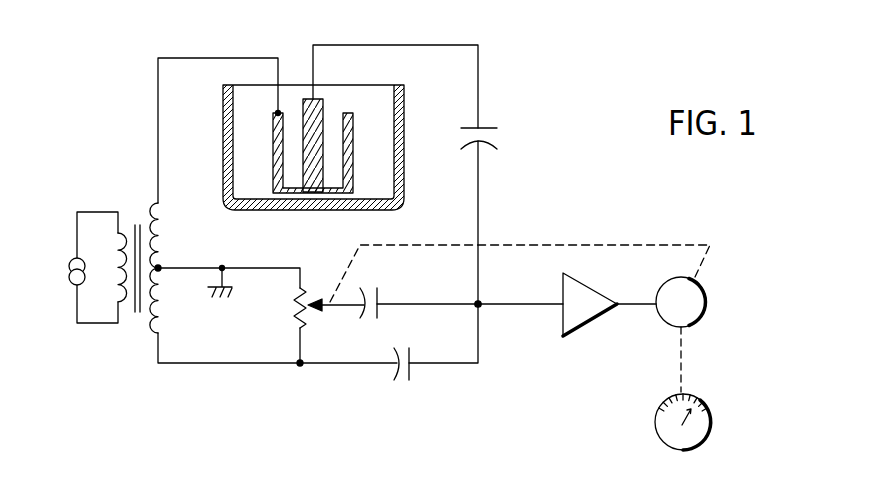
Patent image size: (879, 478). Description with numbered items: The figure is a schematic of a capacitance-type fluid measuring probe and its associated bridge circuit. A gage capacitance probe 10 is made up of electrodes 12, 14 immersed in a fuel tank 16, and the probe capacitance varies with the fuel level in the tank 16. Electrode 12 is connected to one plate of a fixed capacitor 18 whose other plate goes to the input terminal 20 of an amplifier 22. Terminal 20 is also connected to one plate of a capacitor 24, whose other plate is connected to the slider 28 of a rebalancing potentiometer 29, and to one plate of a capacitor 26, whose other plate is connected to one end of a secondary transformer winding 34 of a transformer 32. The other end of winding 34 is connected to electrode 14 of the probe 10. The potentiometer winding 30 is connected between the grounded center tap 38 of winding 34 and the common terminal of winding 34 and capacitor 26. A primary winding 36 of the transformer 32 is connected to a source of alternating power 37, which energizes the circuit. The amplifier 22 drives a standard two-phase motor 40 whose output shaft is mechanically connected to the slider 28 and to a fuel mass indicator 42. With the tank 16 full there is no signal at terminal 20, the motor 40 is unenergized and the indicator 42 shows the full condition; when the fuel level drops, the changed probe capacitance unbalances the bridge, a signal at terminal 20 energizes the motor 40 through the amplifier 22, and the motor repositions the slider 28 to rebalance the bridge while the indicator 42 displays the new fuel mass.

The gage capacitance probe 10 is at (334, 112).
The electrode 12 is at (315, 100).
The electrode 14 is at (352, 138).
The fuel tank 16 is at (403, 176).
The fixed capacitor 18 is at (483, 128).
The input terminal 20 is at (480, 306).
The amplifier 22 is at (585, 283).
The capacitor 24 is at (382, 298).
The capacitor 26 is at (413, 369).
The slider 28 is at (329, 306).
The rebalancing potentiometer 29 is at (308, 290).
The potentiometer winding 30 is at (302, 305).
The transformer 32 is at (114, 281).
The secondary transformer winding 34 is at (159, 364).
The primary winding 36 is at (108, 323).
The source of alternating power 37 is at (70, 260).
The center tap 38 is at (159, 265).
The two-phase motor 40 is at (705, 300).
The fuel mass indicator 42 is at (713, 410).